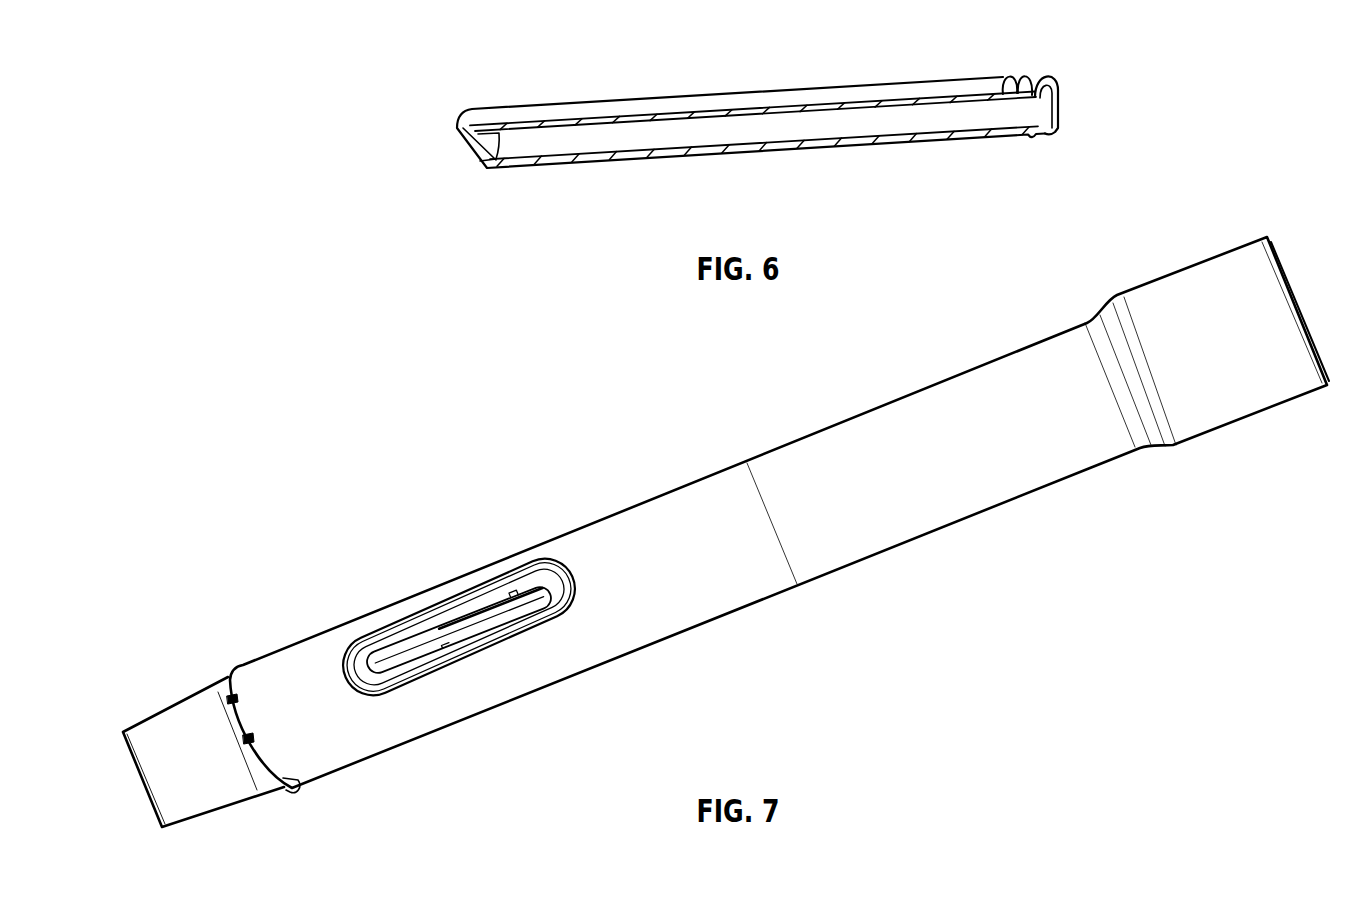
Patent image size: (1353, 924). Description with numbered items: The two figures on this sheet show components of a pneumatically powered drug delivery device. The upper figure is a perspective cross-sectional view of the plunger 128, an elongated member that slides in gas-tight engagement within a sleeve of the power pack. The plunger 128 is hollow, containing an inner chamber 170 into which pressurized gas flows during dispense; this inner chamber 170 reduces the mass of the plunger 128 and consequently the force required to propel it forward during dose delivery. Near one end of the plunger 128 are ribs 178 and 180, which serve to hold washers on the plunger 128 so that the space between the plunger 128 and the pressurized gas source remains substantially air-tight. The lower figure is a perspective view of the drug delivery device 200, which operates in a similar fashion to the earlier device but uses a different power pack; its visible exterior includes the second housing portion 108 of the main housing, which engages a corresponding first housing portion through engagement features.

In FIG. 6, the plunger 128 is at (571, 112).
In FIG. 6, the inner chamber 170 is at (735, 138).
In FIG. 6, the rib 178 is at (1008, 74).
In FIG. 6, the rib 180 is at (1040, 75).
In FIG. 7, the second housing portion 108 is at (788, 461).
In FIG. 7, the drug delivery device 200 is at (726, 532).